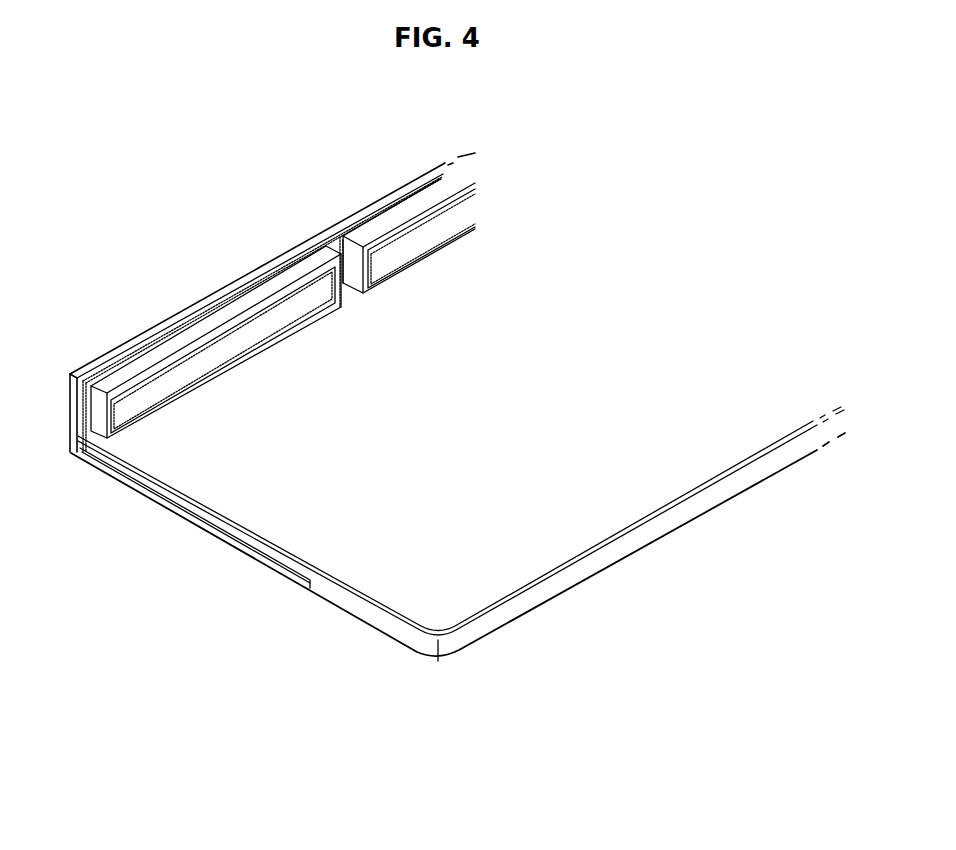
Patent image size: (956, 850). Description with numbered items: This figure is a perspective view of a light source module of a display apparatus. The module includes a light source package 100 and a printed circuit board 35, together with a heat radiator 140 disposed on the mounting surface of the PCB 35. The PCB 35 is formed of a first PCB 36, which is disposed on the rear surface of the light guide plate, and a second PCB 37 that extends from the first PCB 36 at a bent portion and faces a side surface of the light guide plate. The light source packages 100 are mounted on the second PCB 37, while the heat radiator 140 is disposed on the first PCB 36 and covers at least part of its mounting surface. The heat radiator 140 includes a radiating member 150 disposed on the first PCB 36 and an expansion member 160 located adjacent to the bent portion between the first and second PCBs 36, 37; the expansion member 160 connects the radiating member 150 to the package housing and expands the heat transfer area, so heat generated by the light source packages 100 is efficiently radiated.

The light source package 100 is at (327, 318).
The printed circuit board (PCB) 35 is at (254, 372).
The first PCB 36 is at (195, 518).
The second PCB 37 is at (68, 418).
The heat radiator 140 is at (458, 588).
The radiating member 150 is at (537, 707).
The expansion member 160 is at (460, 595).